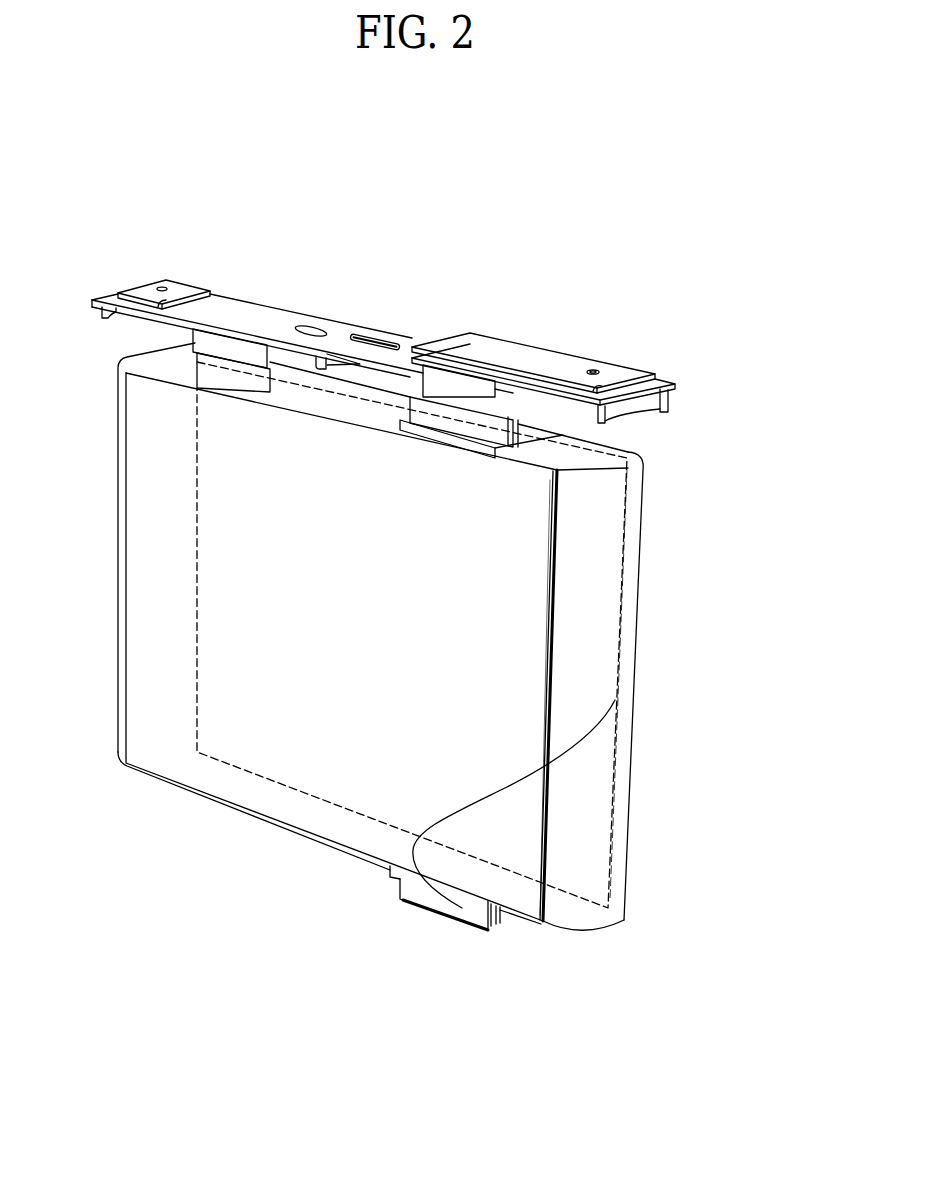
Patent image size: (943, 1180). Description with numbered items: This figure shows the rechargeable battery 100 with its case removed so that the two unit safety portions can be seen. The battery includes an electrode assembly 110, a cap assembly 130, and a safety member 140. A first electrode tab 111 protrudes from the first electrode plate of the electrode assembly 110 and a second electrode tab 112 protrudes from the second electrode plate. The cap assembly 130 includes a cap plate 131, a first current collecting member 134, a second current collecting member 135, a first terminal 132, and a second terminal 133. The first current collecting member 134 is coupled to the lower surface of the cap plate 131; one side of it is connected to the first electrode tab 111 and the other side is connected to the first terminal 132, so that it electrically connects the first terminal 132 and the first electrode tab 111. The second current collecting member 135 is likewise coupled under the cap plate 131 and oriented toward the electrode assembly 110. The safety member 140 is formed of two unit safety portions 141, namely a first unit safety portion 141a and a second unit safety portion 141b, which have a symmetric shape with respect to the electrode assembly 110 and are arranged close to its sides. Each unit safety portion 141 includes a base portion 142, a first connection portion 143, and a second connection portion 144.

The rechargeable battery 100 is at (106, 249).
The electrode assembly 110 is at (577, 917).
The first electrode tab 111 is at (207, 370).
The second electrode tab 112 is at (467, 912).
The cap assembly 130 is at (678, 386).
The cap plate 131 is at (280, 320).
The first terminal 132 is at (177, 289).
The second terminal 133 is at (497, 355).
The first current collecting member 134 is at (207, 337).
The second current collecting member 135 is at (437, 380).
The safety member 140 is at (765, 800).
The unit safety portion 141 is at (702, 585).
The first unit safety portion 141a is at (523, 822).
The second unit safety portion 141b is at (597, 782).
The base portion 142 is at (522, 620).
The first connection portion 143 is at (478, 432).
The second connection portion 144 is at (615, 700).